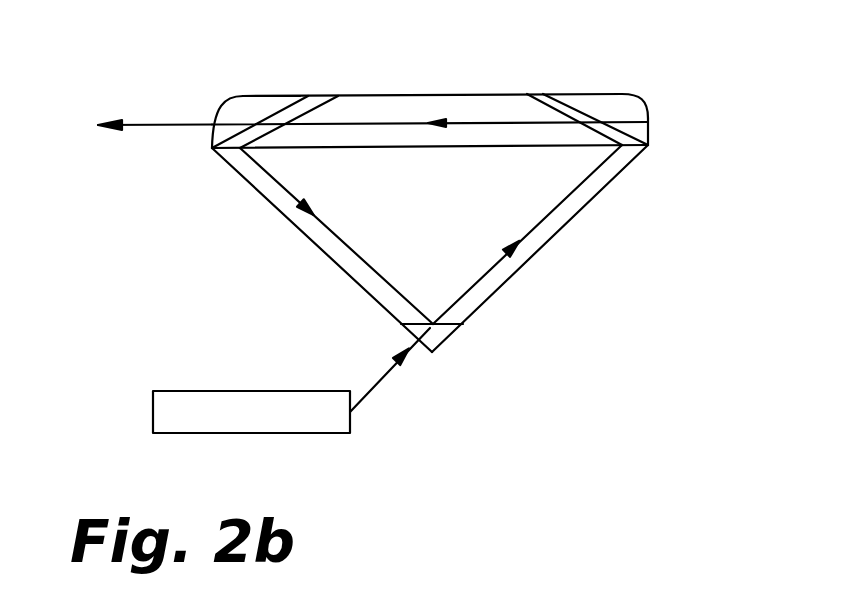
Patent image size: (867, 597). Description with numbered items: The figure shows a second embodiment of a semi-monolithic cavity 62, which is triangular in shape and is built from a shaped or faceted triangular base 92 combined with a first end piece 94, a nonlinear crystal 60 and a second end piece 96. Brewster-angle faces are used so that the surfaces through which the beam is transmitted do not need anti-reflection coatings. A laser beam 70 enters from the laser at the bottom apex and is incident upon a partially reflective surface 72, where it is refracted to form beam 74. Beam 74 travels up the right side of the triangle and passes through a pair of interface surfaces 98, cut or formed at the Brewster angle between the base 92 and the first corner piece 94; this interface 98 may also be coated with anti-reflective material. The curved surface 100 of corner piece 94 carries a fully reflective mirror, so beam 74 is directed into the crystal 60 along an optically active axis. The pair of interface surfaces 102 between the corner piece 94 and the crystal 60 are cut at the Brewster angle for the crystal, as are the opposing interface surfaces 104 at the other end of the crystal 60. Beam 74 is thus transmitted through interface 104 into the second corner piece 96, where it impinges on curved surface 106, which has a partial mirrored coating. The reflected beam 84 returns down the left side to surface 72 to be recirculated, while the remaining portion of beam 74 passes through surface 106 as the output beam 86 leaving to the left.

The nonlinear crystal 60 is at (408, 103).
The semi-monolithic cavity 62 is at (178, 290).
The laser beam 70 is at (387, 382).
The partially reflective surface 72 is at (447, 324).
The beam 74 is at (467, 110).
The reflecting beam 84 is at (353, 236).
The output beam 86 is at (148, 127).
The triangular base 92 is at (505, 277).
The first end piece 94 is at (610, 98).
The second end piece 96 is at (243, 98).
The interface surfaces 98 is at (590, 147).
The curved surface 100 is at (640, 105).
The interface surfaces 102 is at (560, 95).
The interface surfaces 104 is at (290, 106).
The curved surface 106 is at (222, 108).